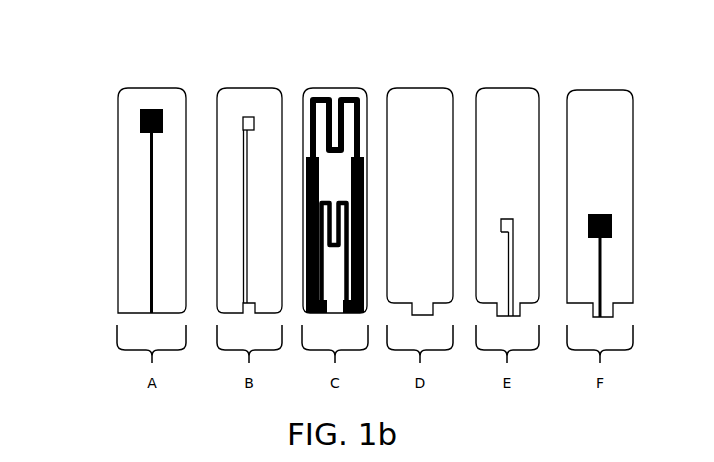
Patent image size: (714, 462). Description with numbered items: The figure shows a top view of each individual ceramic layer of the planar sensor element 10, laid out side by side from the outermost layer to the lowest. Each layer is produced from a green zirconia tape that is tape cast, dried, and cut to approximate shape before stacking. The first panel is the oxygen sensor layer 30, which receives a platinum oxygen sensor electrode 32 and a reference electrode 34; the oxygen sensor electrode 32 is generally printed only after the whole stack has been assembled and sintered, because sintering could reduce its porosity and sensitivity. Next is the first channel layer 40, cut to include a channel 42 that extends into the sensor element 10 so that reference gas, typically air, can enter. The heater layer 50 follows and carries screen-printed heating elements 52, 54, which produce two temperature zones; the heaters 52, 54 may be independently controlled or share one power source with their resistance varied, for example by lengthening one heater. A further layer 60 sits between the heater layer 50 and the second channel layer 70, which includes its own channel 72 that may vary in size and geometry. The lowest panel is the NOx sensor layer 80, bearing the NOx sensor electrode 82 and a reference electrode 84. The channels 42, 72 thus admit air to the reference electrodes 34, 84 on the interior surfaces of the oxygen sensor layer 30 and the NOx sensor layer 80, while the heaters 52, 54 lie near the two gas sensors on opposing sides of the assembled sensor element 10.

The sensor element 10 is at (126, 43).
The oxygen sensor layer 30 is at (160, 88).
The oxygen sensor electrode 32 is at (140, 121).
The reference electrode 34 is at (101, 127).
The first channel layer 40 is at (250, 88).
The channel 42 is at (243, 123).
The heater layer 50 is at (340, 88).
The heating element 52 is at (311, 124).
The heating element 54 is at (334, 200).
The layer 60 is at (420, 88).
The second channel layer 70 is at (507, 88).
The channel 72 is at (507, 219).
The NOx sensor layer 80 is at (600, 90).
The NOx sensor electrode 82 is at (597, 214).
The reference electrode 84 is at (607, 213).